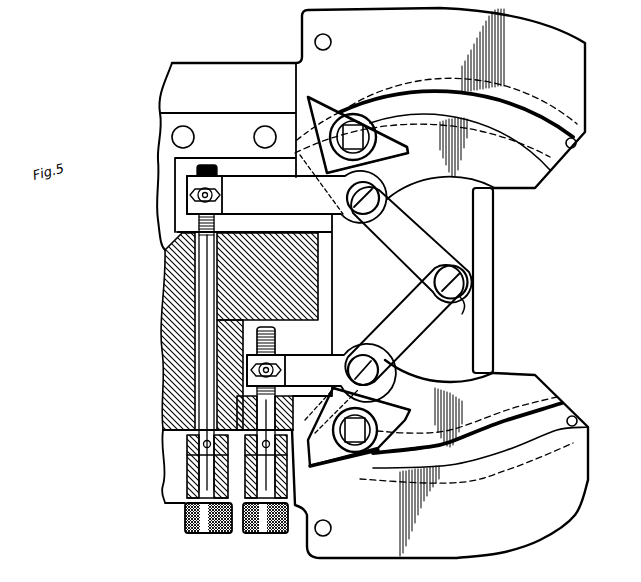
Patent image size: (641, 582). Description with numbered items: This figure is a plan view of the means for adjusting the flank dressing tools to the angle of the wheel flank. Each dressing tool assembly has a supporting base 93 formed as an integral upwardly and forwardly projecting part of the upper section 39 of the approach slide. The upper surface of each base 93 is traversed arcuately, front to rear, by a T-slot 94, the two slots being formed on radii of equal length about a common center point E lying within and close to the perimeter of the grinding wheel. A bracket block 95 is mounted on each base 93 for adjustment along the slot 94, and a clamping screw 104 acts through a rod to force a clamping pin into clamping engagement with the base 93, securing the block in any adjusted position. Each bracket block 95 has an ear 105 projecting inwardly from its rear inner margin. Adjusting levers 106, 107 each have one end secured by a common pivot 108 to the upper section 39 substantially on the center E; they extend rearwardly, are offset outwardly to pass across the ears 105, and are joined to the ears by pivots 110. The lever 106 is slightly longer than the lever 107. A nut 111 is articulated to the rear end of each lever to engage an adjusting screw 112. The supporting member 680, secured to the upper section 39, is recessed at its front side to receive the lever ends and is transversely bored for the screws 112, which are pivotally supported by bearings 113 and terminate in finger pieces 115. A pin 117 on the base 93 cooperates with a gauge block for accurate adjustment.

The upper section of the approach slide 39 is at (468, 251).
The supporting base 93 is at (585, 90).
The T-slot 94 is at (577, 145).
The bracket block 95 is at (408, 149).
The clamping screw 104 is at (375, 123).
The ear 105 is at (370, 171).
The adjusting lever 106 is at (412, 220).
The adjusting lever 107 is at (427, 337).
The common pivot 108 is at (460, 310).
The pivot 110 is at (369, 210).
The nut 111 is at (222, 194).
The adjusting screw 112 is at (210, 290).
The bearing 113 is at (187, 458).
The finger piece 115 is at (241, 531).
The pin 117 is at (325, 35).
The supporting member 680 is at (173, 333).
The common center point E is at (470, 284).